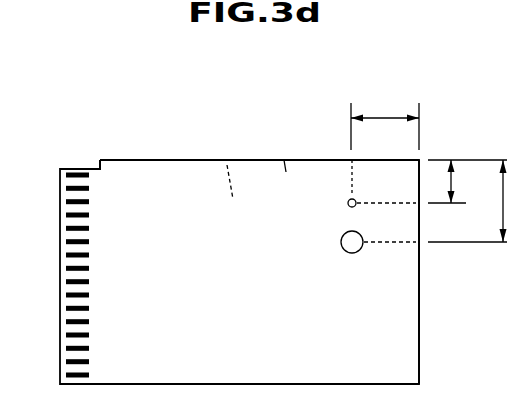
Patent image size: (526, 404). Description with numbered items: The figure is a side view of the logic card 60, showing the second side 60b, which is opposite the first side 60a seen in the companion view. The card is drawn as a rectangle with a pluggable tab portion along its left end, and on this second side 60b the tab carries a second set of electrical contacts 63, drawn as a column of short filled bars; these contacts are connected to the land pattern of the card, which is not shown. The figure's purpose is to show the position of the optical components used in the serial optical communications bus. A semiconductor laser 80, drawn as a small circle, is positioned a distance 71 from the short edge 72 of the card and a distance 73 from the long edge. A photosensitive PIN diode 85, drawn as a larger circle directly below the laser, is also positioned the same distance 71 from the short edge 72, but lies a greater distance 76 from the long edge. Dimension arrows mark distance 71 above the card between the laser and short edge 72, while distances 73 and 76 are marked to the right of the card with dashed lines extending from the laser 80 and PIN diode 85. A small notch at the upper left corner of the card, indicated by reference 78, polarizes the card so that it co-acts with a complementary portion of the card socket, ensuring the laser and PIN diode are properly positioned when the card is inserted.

The logic card 60 is at (254, 288).
The first side 60a is at (227, 165).
The second side 60b is at (286, 172).
The second set of electrical contacts 63 is at (89, 309).
The distance from short edge 71 is at (383, 117).
The short edge 72 is at (420, 349).
The distance from long edge 73 is at (461, 183).
The distance from long edge 76 is at (502, 208).
The notch in card corner 78 is at (79, 168).
The semiconductor laser 80 is at (347, 203).
The photosensitive PIN diode 85 is at (341, 240).